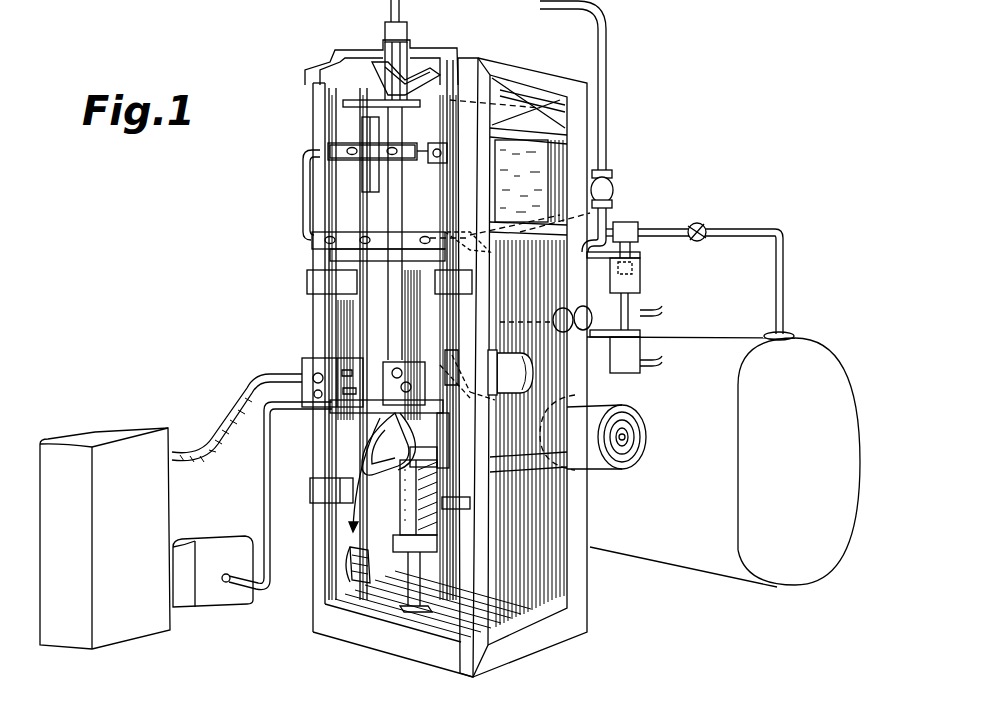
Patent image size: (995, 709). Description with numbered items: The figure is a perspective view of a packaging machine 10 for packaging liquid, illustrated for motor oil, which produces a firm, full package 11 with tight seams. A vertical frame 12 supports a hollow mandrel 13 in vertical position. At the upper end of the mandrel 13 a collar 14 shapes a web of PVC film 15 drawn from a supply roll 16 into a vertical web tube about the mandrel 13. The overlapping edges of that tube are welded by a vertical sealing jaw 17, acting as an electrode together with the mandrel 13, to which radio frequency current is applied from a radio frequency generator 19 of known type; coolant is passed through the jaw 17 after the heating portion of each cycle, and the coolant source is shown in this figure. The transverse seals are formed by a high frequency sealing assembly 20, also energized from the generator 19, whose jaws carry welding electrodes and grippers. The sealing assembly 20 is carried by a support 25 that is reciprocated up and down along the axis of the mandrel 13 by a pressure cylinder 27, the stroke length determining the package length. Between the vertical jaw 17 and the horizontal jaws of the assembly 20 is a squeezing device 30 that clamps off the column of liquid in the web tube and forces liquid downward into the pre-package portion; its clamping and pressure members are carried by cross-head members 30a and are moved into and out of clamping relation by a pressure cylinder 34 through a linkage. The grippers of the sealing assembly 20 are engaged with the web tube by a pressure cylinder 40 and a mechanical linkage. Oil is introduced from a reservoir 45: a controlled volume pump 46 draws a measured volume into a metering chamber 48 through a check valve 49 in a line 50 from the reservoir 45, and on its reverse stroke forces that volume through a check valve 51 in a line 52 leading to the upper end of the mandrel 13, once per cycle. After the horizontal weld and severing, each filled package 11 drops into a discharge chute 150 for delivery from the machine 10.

The packaging machine 10 is at (257, 184).
The package 11 is at (348, 565).
The vertical frame 12 is at (587, 115).
The hollow mandrel 13 is at (390, 62).
The collar 14 is at (370, 130).
The PVC film 15 is at (538, 150).
The supply roll 16 is at (630, 437).
The vertical sealing jaw 17 is at (368, 133).
The radio frequency generator 19 is at (117, 430).
The high frequency sealing assembly 20 is at (279, 349).
The support 25 is at (412, 422).
The pressure cylinder 27 is at (410, 507).
The squeezing device 30 is at (283, 246).
The cross-head members 30a is at (312, 240).
The pressure cylinder 34 is at (592, 213).
The pressure cylinder 40 is at (522, 372).
The reservoir 45 is at (678, 547).
The controlled volume pump 46 is at (637, 323).
The metering chamber 48 is at (633, 232).
The check valve 49 is at (699, 231).
The line 50 is at (785, 273).
The check valve 51 is at (610, 190).
The line 52 is at (607, 42).
The discharge chute 150 is at (388, 463).